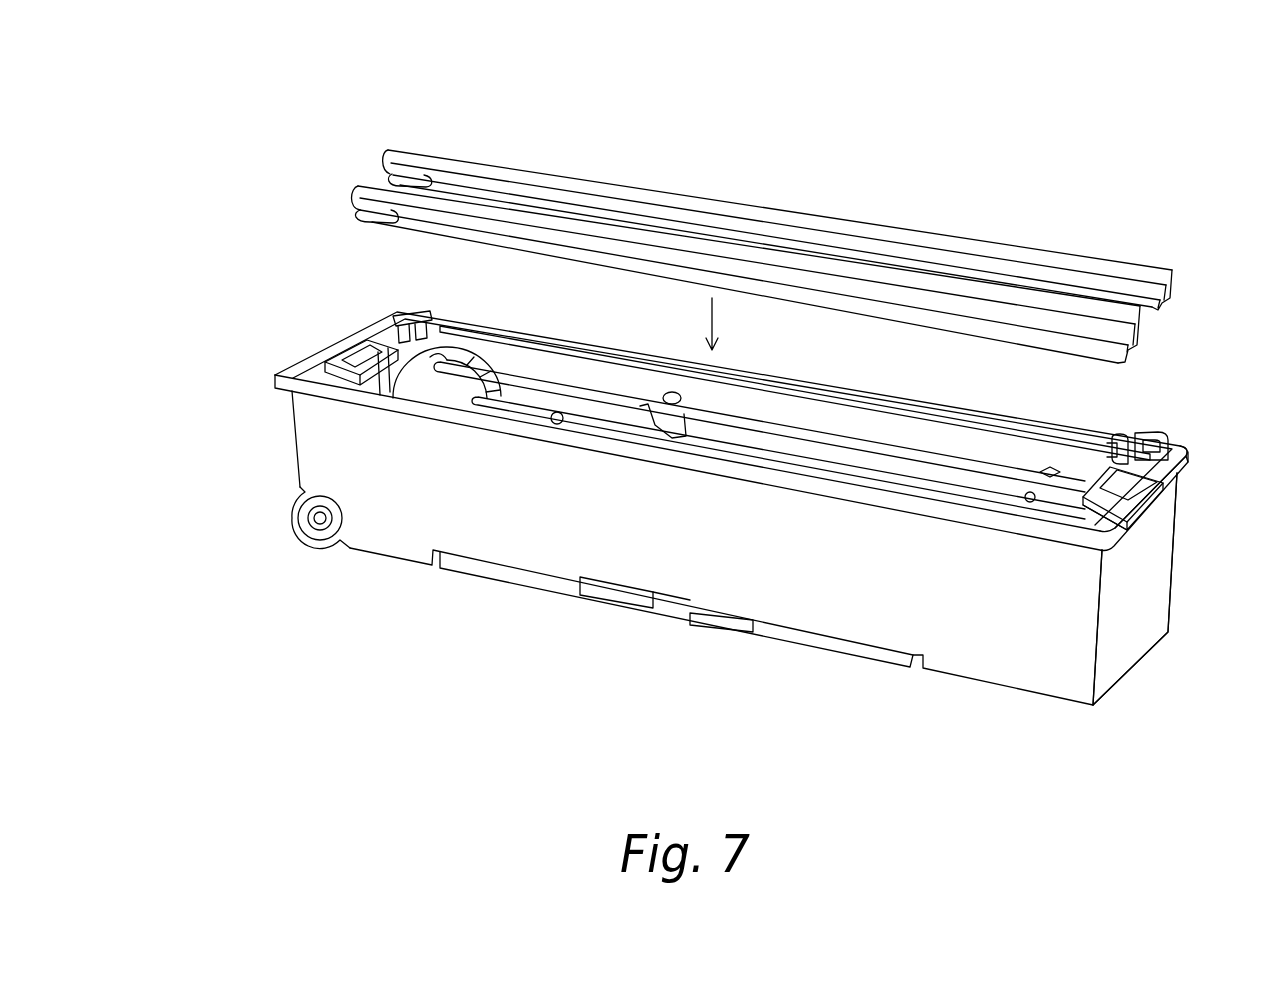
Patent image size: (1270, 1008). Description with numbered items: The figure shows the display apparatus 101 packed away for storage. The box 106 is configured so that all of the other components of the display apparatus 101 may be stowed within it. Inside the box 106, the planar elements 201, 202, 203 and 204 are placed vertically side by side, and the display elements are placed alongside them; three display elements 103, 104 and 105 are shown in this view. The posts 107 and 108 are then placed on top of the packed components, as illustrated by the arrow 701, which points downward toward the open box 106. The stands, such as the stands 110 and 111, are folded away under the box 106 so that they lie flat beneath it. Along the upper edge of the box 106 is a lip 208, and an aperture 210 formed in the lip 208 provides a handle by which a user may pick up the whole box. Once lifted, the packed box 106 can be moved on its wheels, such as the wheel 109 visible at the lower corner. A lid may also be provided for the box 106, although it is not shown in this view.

The display apparatus 101 is at (242, 439).
The display element 103 is at (820, 459).
The display element 104 is at (527, 413).
The display element 105 is at (458, 350).
The box 106 is at (1147, 654).
The post 107 is at (362, 208).
The post 108 is at (394, 158).
The wheel 109 is at (318, 526).
The stand 110 is at (507, 581).
The stand 111 is at (812, 641).
The planar element 201 is at (1098, 435).
The planar element 202 is at (1158, 440).
The planar element 203 is at (1188, 462).
The planar element 204 is at (1005, 437).
The lip 208 is at (1128, 522).
The aperture 210 is at (1163, 500).
The arrow 701 is at (713, 315).